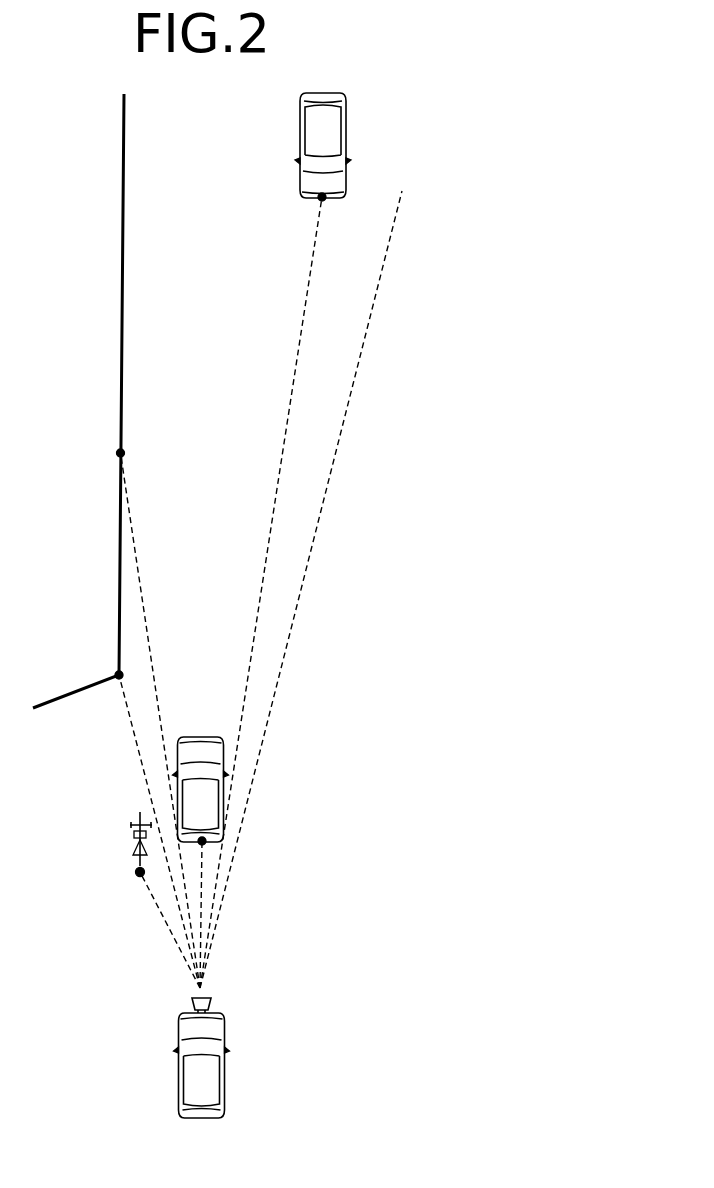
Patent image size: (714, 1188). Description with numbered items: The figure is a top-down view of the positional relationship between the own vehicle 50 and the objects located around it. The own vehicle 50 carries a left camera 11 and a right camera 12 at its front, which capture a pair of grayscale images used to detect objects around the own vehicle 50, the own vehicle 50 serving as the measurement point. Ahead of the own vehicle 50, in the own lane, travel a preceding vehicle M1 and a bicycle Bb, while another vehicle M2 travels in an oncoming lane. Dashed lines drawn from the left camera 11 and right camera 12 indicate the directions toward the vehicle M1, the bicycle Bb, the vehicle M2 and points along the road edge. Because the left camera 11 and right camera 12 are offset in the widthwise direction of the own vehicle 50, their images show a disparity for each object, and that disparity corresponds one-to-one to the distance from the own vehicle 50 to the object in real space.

The vehicle M2 is at (316, 198).
The vehicle M1 is at (189, 737).
The bicycle Bb is at (133, 822).
The left camera 11 is at (259, 992).
The right camera 12 is at (211, 996).
The own vehicle 50 is at (226, 1041).